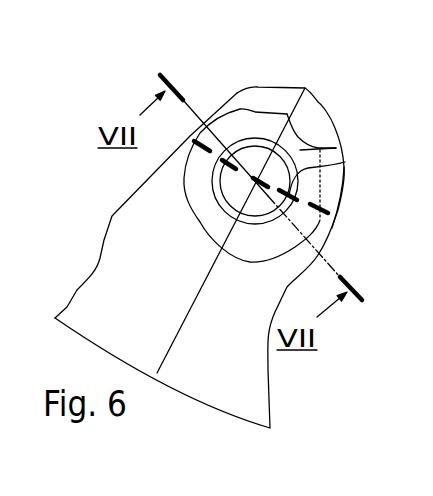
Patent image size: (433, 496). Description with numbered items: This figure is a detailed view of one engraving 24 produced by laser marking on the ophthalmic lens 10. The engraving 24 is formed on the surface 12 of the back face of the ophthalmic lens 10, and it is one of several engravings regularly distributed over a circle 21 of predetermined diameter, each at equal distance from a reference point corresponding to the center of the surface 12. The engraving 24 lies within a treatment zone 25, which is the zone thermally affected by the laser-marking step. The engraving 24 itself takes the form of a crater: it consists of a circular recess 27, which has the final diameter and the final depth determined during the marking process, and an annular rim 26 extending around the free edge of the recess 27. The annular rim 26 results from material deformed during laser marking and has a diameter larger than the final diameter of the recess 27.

The ophthalmic lens 10 is at (196, 415).
The surface 12 is at (182, 206).
The circle 21 is at (342, 197).
The engraving 24 is at (209, 160).
The treatment zone 25 is at (247, 122).
The annular rim 26 is at (345, 162).
The circular recess 27 is at (336, 148).